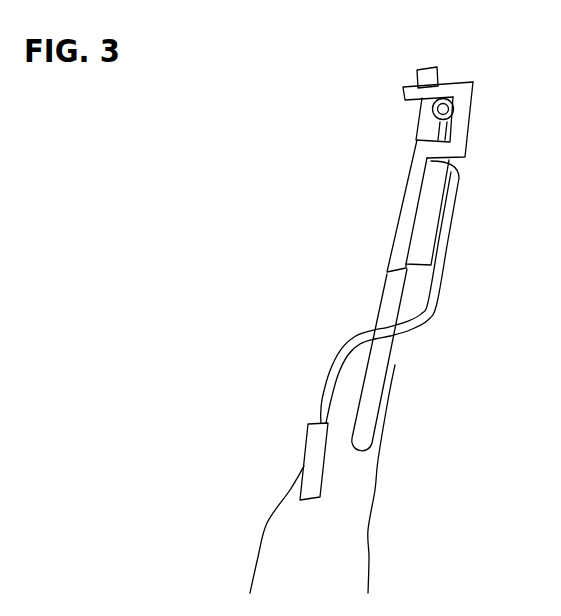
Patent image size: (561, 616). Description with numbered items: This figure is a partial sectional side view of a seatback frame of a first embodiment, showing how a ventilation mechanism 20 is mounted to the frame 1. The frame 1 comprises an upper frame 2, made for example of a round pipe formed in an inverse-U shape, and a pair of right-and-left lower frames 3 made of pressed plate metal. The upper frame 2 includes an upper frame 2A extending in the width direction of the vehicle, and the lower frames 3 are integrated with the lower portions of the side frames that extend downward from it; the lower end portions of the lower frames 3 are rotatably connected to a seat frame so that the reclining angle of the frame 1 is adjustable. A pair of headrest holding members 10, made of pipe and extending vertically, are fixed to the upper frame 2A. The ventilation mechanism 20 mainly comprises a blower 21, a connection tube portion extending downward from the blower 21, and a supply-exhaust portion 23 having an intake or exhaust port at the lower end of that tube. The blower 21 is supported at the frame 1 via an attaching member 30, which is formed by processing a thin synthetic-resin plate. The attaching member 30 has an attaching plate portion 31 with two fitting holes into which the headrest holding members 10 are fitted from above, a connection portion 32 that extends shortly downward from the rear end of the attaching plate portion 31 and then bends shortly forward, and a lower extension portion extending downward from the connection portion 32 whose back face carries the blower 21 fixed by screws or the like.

The frame 1 is at (386, 521).
The upper frame 2 is at (373, 402).
The upper frame 2A is at (456, 109).
The lower frame 3 is at (268, 558).
The headrest holding member 10 is at (427, 77).
The ventilation mechanism 20 is at (350, 345).
The blower 21 is at (412, 232).
The supply-exhaust portion 23 is at (307, 445).
The attaching member 30 is at (404, 199).
The attaching plate portion 31 is at (453, 86).
The connection portion 32 is at (467, 133).